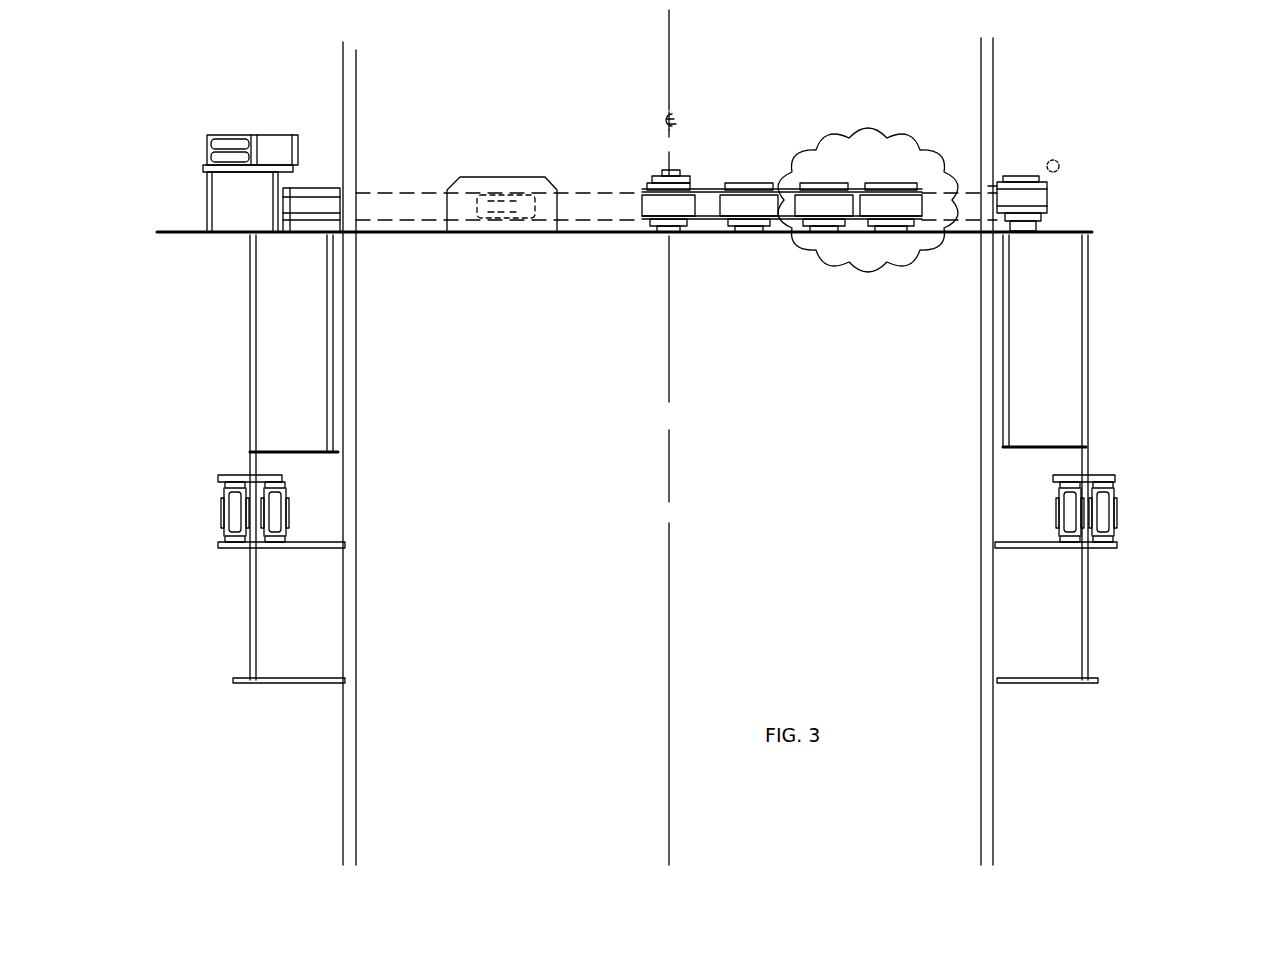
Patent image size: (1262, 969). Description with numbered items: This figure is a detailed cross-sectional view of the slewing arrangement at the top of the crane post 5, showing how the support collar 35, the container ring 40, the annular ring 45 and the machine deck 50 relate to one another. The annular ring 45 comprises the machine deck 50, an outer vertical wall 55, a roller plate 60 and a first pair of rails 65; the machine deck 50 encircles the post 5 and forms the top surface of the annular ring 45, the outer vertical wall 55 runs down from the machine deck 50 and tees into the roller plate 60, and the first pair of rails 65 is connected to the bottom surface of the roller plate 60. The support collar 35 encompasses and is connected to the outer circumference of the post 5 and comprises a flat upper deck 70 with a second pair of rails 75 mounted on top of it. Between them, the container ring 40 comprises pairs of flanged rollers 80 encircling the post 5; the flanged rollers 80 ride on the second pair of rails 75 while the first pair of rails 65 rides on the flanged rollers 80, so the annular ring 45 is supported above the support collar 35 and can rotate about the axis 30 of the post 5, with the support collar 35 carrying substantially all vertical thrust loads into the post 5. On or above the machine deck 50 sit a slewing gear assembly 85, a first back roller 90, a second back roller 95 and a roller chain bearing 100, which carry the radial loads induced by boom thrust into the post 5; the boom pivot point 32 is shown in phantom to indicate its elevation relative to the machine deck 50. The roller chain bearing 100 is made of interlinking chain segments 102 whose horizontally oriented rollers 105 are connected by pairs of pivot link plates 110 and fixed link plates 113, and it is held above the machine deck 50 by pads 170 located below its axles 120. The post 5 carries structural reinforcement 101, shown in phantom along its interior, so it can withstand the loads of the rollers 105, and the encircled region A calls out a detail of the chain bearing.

The post 5 is at (357, 88).
The axis 30 is at (671, 467).
The boom pivot point 32 is at (1062, 158).
The support collar 35 is at (237, 612).
The container ring 40 is at (680, 503).
The annular ring 45 is at (243, 357).
The machine deck 50 is at (166, 238).
The outer vertical wall 55 is at (250, 310).
The roller plate 60 is at (240, 475).
The first pair of rails 65 is at (224, 492).
The upper deck 70 is at (293, 550).
The second pair of rails 75 is at (226, 540).
The flanged rollers 80 is at (221, 512).
The slewing gear assembly 85 is at (249, 130).
The first back roller 90 is at (313, 185).
The second back roller 95 is at (510, 174).
The roller chain bearing 100 is at (870, 190).
The structural reinforcement 101 is at (393, 203).
The chain segments 102 is at (600, 207).
The rollers 105 is at (645, 206).
The pivot link plates 110 is at (1040, 186).
The module support 113 is at (1042, 222).
The axles 120 is at (670, 176).
The pads 170 is at (815, 236).
The detail region A is at (846, 265).